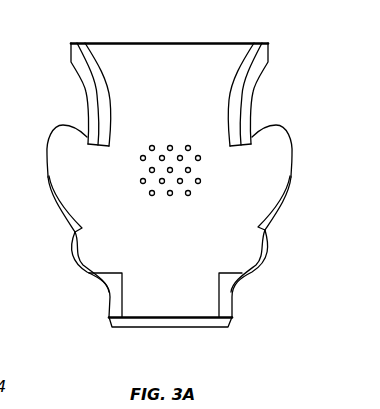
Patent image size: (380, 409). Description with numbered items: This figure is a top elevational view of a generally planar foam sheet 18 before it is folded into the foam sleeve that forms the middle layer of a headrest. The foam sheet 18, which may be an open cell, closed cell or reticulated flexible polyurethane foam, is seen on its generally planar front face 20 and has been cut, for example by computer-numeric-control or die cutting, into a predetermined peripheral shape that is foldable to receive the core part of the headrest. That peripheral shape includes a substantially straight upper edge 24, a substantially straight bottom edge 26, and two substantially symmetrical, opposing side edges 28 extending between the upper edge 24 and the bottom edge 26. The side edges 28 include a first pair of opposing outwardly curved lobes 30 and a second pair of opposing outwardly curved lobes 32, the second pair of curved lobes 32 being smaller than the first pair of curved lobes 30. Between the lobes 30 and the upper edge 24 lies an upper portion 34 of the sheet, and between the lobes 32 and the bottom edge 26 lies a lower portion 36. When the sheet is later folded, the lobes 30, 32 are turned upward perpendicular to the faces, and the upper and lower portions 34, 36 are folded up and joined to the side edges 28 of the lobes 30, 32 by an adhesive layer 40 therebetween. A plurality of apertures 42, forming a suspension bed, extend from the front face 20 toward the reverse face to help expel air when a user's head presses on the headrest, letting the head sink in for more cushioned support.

The foam sheet 18 is at (171, 188).
The front face 20 is at (152, 169).
The upper edge 24 is at (175, 42).
The bottom edge 26 is at (133, 326).
The side edges 28 is at (58, 208).
The outwardly curved lobes 30 is at (59, 153).
The second pair of outwardly curved lobes 32 is at (85, 250).
The upper portion 34 is at (121, 136).
The lower portion 36 is at (208, 299).
The adhesive layer 40 is at (80, 310).
The apertures 42 is at (141, 156).